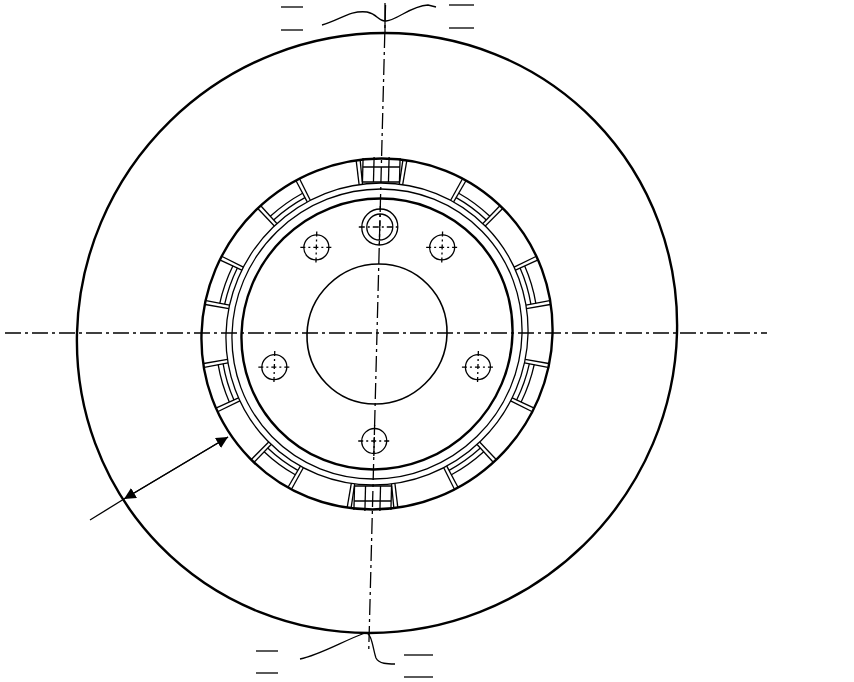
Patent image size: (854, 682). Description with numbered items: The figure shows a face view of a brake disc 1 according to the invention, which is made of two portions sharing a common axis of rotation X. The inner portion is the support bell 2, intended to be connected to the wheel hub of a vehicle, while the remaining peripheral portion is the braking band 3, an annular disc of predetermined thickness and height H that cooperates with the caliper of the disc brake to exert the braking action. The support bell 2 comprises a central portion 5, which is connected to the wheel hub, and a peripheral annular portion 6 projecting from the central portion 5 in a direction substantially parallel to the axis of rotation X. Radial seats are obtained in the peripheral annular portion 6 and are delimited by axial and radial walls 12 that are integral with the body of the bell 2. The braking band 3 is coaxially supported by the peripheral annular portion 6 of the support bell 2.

The brake disc 1 is at (623, 116).
The support bell 2 is at (473, 402).
The braking band 3 is at (176, 164).
The central portion 5 is at (483, 308).
The peripheral annular portion 6 is at (443, 182).
The radial walls 12 is at (357, 188).
The height H is at (146, 490).
The axis of rotation X is at (365, 345).